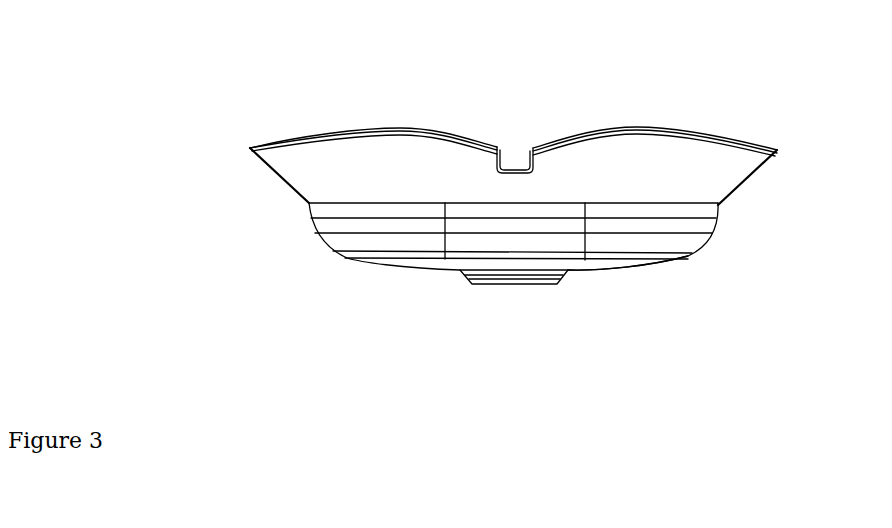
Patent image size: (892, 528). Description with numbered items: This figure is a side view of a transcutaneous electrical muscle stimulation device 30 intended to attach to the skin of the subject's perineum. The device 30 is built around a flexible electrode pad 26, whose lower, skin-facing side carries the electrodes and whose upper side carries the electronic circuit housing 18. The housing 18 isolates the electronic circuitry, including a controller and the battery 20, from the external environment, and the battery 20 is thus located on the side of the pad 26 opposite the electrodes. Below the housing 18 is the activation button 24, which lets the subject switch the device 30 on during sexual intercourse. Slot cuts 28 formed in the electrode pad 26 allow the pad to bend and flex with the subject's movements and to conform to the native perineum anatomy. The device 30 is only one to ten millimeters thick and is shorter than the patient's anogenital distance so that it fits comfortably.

The device 30 is at (238, 108).
The slot cuts 28 is at (512, 167).
The electrode pad 26 is at (728, 165).
The electronic circuit housing 18 is at (315, 233).
The activation button 24 is at (512, 283).
The battery 20 is at (560, 275).